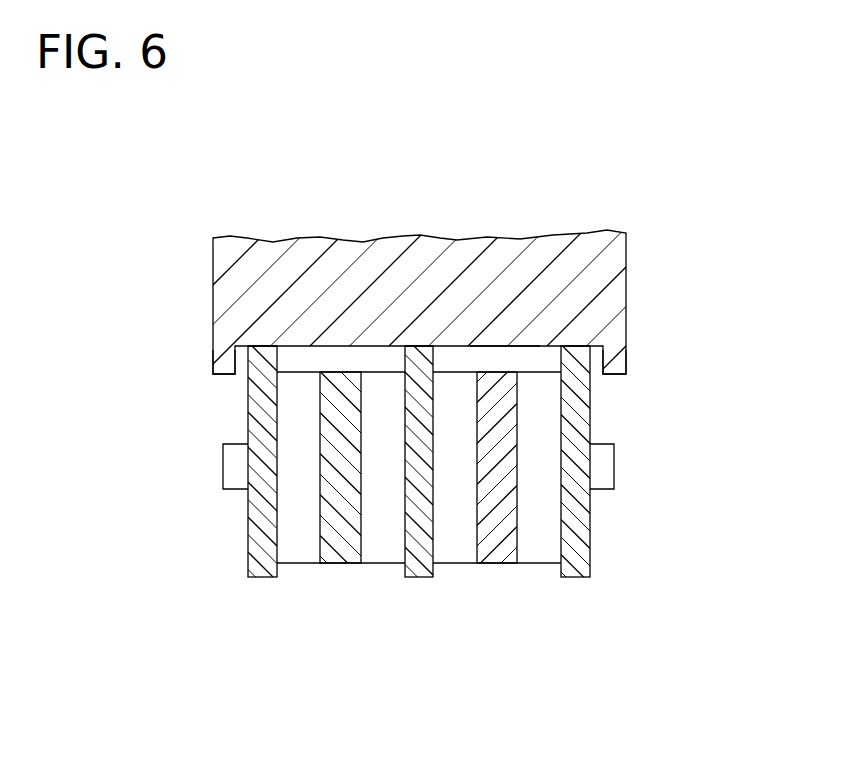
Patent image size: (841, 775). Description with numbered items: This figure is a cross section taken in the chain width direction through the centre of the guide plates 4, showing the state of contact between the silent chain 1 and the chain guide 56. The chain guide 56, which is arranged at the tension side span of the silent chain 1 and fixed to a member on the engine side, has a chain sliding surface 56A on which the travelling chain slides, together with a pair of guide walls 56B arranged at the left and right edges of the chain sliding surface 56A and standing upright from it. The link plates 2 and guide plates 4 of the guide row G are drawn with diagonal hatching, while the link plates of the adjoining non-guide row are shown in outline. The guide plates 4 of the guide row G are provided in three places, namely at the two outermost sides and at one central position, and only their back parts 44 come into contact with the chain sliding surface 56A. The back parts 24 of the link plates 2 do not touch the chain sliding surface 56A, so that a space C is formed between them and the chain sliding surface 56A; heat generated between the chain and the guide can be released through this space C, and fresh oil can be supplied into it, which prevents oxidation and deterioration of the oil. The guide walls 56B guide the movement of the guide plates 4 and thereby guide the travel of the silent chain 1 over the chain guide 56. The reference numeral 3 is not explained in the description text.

The silent chain 1 is at (168, 507).
The link plates 2 is at (381, 566).
The terminal 3 is at (605, 463).
The guide plates 4 is at (247, 567).
The back parts of the link plates 24 is at (349, 372).
The back parts of the guide plates 44 is at (258, 348).
The chain guide 56 is at (628, 284).
The chain sliding surface 56A is at (513, 349).
The guide walls 56B is at (213, 364).
The space C is at (375, 358).
The guide row G is at (620, 525).